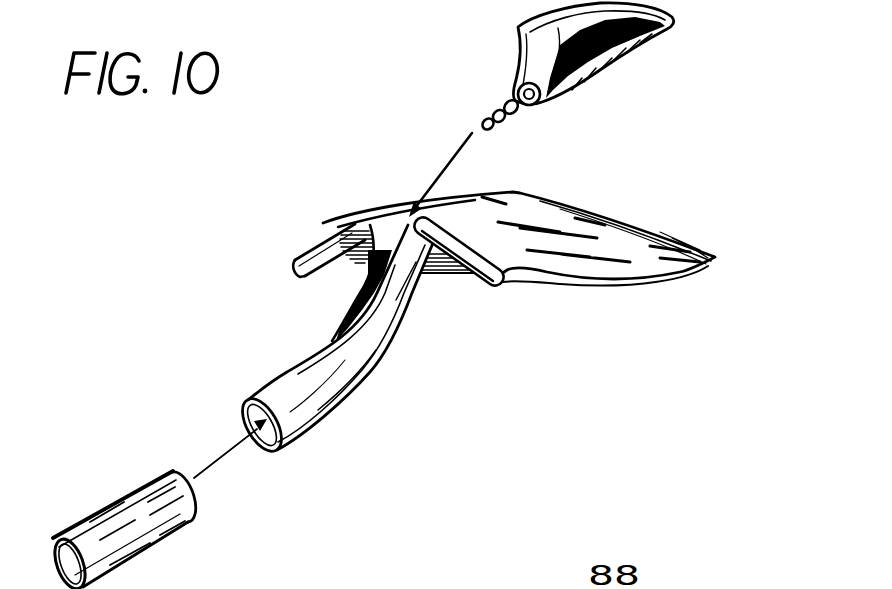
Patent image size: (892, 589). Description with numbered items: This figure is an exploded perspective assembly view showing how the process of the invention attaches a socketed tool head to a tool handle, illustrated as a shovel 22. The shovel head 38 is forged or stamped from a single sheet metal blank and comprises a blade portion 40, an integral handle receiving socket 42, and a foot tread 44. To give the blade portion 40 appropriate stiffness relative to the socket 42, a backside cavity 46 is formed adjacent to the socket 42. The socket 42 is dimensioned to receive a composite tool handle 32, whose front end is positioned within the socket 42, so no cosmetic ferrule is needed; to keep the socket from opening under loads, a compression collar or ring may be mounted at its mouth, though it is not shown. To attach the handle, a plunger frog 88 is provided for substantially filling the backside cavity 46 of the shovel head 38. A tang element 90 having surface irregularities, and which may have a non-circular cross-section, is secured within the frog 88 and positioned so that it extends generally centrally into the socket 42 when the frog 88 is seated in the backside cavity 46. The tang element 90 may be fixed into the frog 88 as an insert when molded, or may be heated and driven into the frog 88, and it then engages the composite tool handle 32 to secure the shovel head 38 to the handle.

The shovel 22 is at (236, 320).
The composite tool handle 32 is at (137, 552).
The shovel head 38 is at (310, 238).
The blade portion 40 is at (713, 257).
The handle receiving socket 42 is at (330, 403).
The foot tread 44 is at (497, 287).
The backside cavity 46 is at (393, 233).
The plunger frog 88 is at (603, 50).
The tang element 90 is at (510, 122).